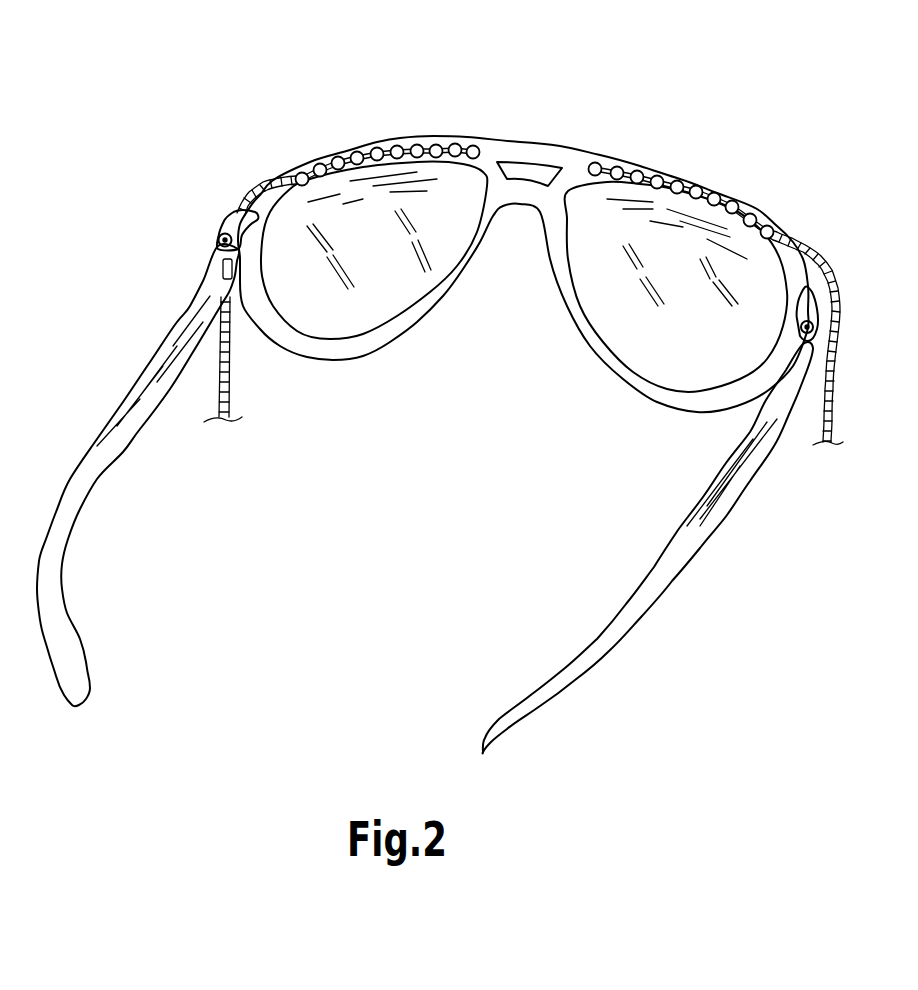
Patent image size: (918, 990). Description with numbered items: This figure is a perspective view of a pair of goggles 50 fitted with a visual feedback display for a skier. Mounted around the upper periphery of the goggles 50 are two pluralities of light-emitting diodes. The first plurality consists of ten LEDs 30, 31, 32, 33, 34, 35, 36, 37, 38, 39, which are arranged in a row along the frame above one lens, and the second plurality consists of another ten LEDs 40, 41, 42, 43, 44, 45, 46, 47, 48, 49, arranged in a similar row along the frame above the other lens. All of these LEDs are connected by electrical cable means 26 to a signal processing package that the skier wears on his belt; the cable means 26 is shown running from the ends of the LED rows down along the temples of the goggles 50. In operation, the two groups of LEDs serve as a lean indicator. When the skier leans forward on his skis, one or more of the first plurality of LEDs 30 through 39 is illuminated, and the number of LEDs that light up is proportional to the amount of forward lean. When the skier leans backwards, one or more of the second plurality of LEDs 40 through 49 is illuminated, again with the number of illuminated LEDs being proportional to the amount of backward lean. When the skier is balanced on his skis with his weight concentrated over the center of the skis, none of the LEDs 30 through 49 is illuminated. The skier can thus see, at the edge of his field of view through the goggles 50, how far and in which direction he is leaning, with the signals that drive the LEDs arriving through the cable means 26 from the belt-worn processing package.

The electrical cable means 26 is at (230, 377).
The LED 30 is at (300, 173).
The LED 31 is at (316, 165).
The LED 32 is at (335, 158).
The LED 33 is at (355, 152).
The LED 34 is at (376, 148).
The LED 35 is at (397, 146).
The LED 36 is at (418, 145).
The LED 37 is at (438, 145).
The LED 38 is at (458, 145).
The LED 39 is at (478, 147).
The LED 40 is at (593, 164).
The LED 41 is at (617, 167).
The LED 42 is at (638, 172).
The LED 43 is at (658, 177).
The LED 44 is at (678, 182).
The LED 45 is at (696, 187).
The LED 46 is at (716, 194).
The LED 47 is at (736, 203).
The LED 48 is at (754, 215).
The LED 49 is at (773, 228).
The goggles 50 is at (535, 145).